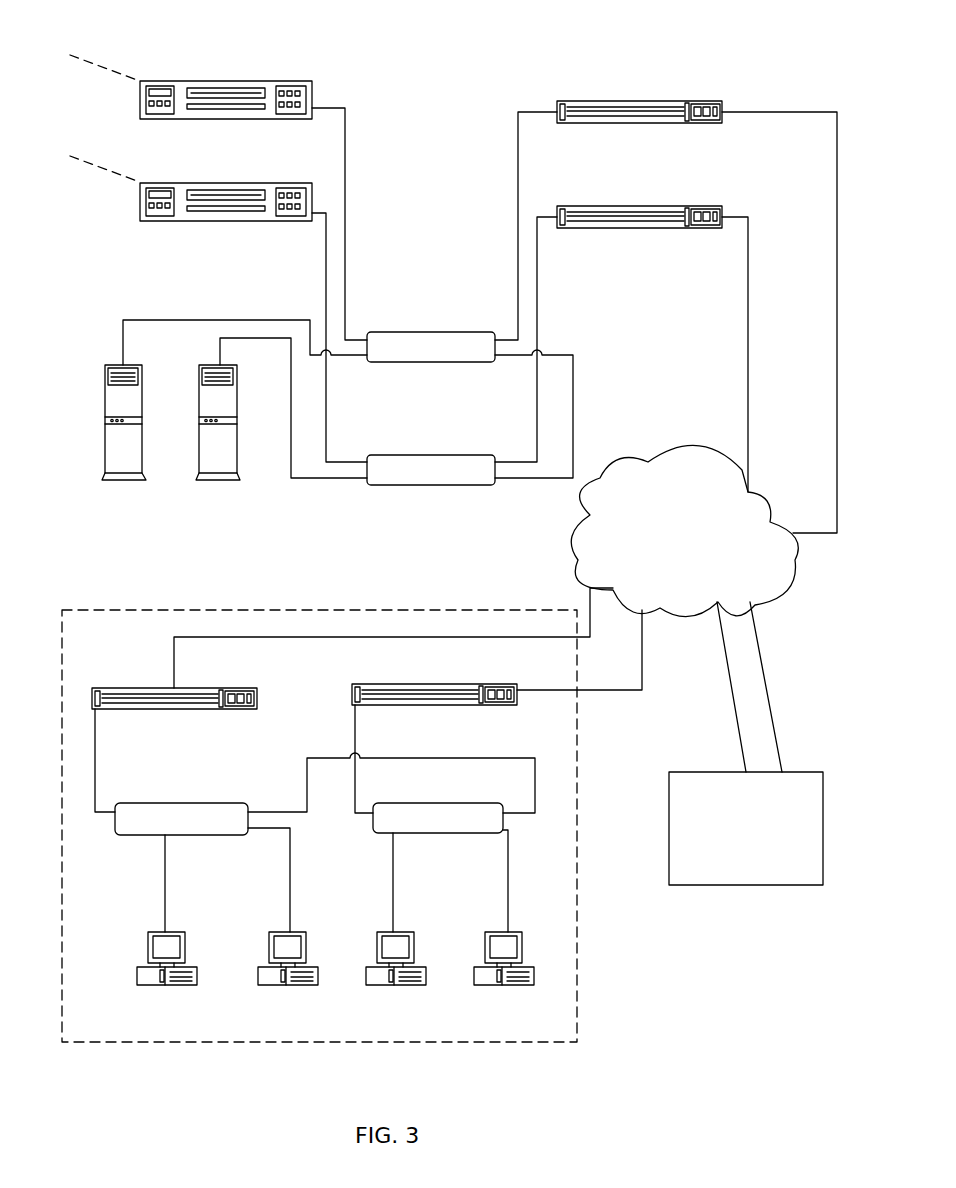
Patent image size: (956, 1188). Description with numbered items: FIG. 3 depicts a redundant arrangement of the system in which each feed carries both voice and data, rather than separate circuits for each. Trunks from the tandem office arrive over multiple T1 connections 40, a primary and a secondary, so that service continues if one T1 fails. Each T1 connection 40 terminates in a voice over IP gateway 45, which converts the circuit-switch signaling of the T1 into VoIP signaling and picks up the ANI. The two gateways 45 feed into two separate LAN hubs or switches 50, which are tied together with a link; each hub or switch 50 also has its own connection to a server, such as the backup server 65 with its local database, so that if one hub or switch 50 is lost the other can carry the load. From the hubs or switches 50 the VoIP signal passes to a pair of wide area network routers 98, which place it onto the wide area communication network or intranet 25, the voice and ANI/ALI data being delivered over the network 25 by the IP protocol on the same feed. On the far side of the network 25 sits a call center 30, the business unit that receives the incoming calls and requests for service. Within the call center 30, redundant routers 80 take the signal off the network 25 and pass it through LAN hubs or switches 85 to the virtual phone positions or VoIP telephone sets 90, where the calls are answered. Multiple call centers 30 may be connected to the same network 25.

The T1 connection 40 is at (70, 56).
The voice over IP gateway 45 is at (238, 81).
The router 98 is at (668, 101).
The LAN hub or switch 50 is at (437, 332).
The backup server 65 is at (108, 420).
The wide area communication network or intranet 25 is at (668, 443).
The call center 30 is at (465, 610).
The router 80 is at (240, 688).
The LAN hub or switch 85 is at (228, 803).
The virtual phone position or VoIP telephone set 90 is at (185, 933).